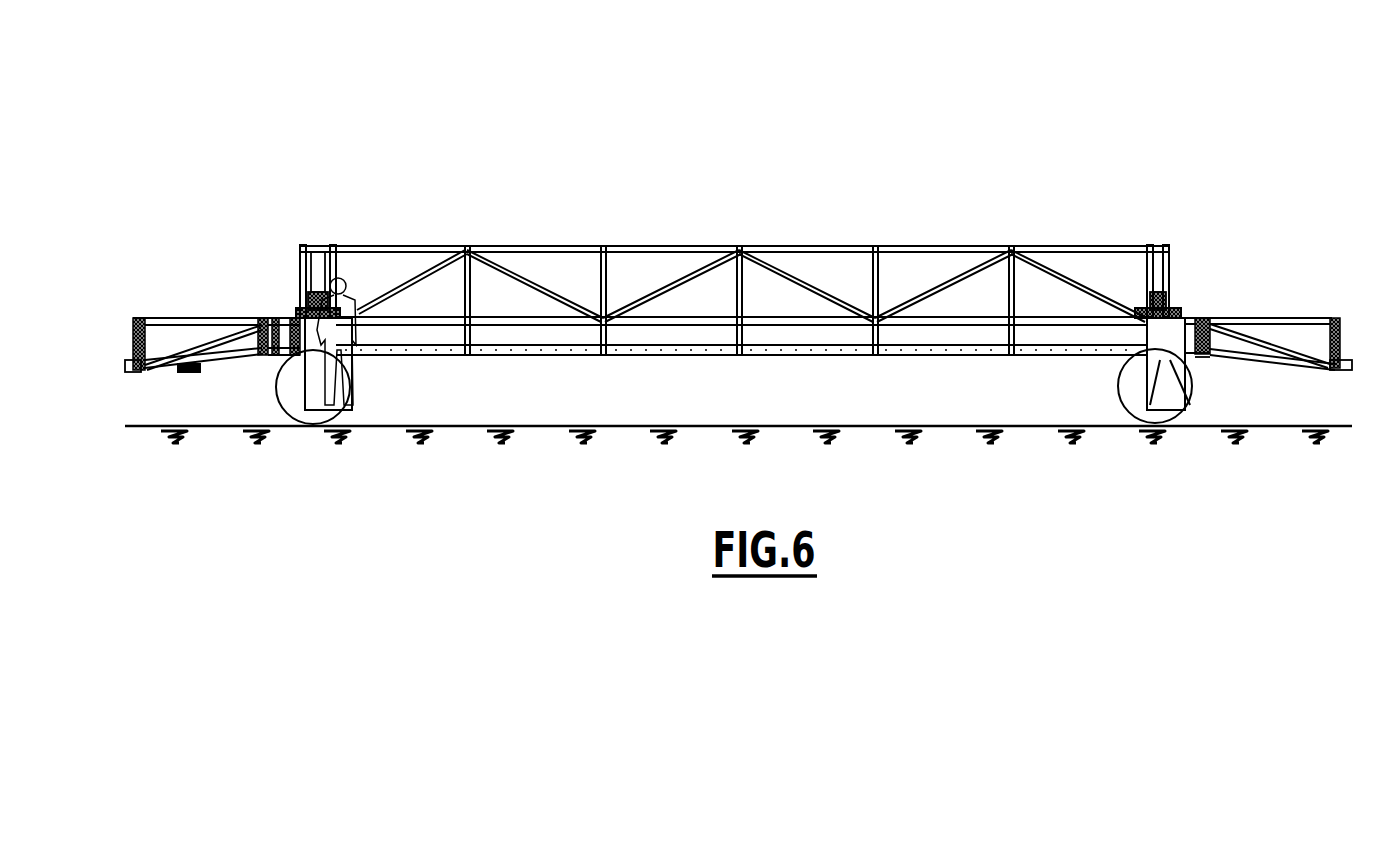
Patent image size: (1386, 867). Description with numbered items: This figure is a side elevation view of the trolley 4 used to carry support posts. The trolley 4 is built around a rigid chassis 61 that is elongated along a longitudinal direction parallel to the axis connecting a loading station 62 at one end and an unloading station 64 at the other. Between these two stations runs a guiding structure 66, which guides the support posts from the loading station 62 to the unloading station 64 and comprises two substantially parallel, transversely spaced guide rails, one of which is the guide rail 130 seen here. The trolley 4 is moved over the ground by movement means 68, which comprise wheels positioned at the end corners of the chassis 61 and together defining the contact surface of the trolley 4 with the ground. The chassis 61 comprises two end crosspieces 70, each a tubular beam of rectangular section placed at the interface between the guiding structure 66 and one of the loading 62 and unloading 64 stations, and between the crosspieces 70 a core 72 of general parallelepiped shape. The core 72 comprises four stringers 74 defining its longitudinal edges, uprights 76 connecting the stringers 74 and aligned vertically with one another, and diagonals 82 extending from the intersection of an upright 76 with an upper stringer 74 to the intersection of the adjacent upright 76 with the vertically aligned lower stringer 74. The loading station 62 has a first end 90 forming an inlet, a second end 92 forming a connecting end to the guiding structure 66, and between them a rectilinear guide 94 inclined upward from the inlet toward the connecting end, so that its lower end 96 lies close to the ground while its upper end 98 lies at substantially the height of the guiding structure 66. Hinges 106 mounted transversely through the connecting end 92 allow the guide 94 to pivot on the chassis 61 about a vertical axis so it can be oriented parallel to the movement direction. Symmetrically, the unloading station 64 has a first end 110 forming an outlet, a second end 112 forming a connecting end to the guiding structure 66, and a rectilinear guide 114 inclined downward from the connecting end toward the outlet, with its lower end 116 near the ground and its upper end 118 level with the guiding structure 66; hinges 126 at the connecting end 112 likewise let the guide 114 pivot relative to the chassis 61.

The trolley 4 is at (739, 264).
The rigid chassis 61 is at (590, 237).
The loading station 62 is at (190, 290).
The unloading station 64 is at (1298, 302).
The guiding structure 66 is at (713, 362).
The movement means 68 is at (1118, 438).
The end crosspiece 70 is at (318, 282).
The core 72 is at (608, 232).
The stringer 74 is at (1085, 248).
The upright 76 is at (464, 285).
The diagonal 82 is at (408, 277).
The first end 90 is at (165, 310).
The second end 92 is at (285, 308).
The rectilinear guide 94 is at (222, 290).
The lower end 96 is at (143, 366).
The upper end 98 is at (268, 357).
The hinge 106 is at (268, 318).
The first end 110 is at (1325, 390).
The second end 112 is at (1205, 312).
The rectilinear guide 114 is at (1268, 370).
The lower end 116 is at (1343, 360).
The upper end 118 is at (1210, 356).
The hinge 126 is at (1220, 335).
The guide rail 130 is at (640, 356).